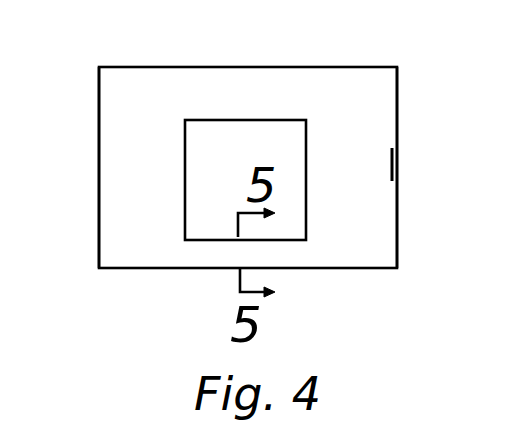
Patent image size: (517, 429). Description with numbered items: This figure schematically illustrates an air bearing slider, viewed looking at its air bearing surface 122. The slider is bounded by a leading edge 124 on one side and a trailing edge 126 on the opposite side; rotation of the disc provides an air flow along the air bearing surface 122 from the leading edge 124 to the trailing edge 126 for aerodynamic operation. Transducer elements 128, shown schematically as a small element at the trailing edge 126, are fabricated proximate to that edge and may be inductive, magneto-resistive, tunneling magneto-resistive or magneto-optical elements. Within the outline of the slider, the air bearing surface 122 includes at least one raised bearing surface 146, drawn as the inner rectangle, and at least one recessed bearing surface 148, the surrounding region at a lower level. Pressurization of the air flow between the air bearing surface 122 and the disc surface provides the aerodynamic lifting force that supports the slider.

The air bearing surface 122 is at (351, 104).
The leading edge 124 is at (99, 172).
The trailing edge 126 is at (398, 98).
The transducer elements 128 is at (402, 167).
The raised bearing surface 146 is at (228, 128).
The recessed bearing surface 148 is at (355, 205).